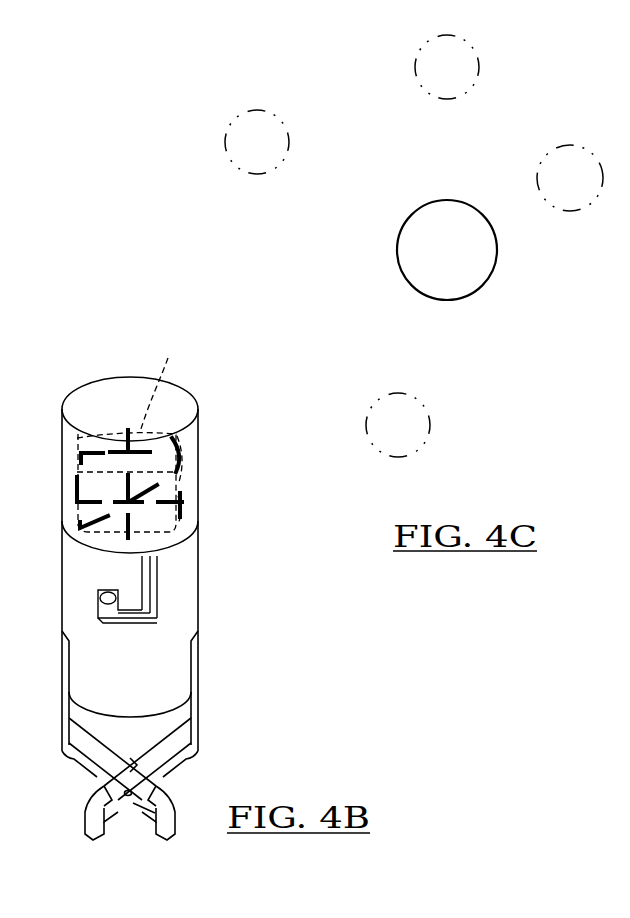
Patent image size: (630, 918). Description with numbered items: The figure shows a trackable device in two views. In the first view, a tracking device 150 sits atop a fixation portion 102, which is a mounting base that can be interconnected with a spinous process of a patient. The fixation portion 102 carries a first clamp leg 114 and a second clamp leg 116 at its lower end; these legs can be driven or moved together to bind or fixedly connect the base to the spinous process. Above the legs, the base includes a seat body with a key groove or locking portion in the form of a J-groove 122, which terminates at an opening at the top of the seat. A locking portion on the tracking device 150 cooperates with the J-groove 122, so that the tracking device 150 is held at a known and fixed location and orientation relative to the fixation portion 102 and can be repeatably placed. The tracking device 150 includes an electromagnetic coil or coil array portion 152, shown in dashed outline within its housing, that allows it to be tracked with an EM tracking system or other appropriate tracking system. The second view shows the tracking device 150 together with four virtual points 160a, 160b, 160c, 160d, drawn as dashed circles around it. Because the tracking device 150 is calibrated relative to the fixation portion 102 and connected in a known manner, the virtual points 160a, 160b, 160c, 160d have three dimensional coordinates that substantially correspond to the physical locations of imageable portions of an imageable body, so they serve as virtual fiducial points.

In FIG. 4B, the fixation portion 102 is at (240, 650).
In FIG. 4B, the tracking device 150 is at (204, 466).
In FIG. 4C, the tracking device 150 is at (502, 250).
In FIG. 4B, the electromagnetic coil or coil array portion 152 is at (133, 434).
In FIG. 4B, the J-groove 122 is at (148, 587).
In FIG. 4B, the second clamp leg 116 is at (92, 823).
In FIG. 4B, the first clamp leg 114 is at (160, 823).
In FIG. 4C, the virtual point 160a is at (431, 424).
In FIG. 4C, the virtual point 160b is at (291, 141).
In FIG. 4C, the virtual point 160c is at (413, 67).
In FIG. 4C, the virtual point 160d is at (536, 178).